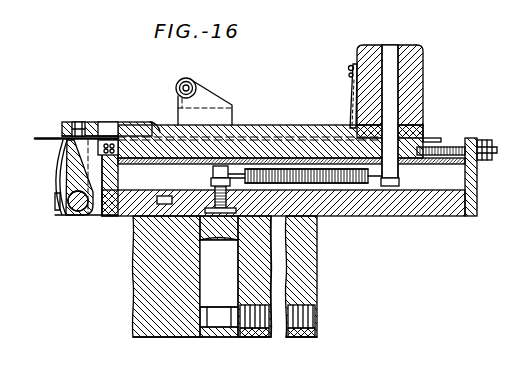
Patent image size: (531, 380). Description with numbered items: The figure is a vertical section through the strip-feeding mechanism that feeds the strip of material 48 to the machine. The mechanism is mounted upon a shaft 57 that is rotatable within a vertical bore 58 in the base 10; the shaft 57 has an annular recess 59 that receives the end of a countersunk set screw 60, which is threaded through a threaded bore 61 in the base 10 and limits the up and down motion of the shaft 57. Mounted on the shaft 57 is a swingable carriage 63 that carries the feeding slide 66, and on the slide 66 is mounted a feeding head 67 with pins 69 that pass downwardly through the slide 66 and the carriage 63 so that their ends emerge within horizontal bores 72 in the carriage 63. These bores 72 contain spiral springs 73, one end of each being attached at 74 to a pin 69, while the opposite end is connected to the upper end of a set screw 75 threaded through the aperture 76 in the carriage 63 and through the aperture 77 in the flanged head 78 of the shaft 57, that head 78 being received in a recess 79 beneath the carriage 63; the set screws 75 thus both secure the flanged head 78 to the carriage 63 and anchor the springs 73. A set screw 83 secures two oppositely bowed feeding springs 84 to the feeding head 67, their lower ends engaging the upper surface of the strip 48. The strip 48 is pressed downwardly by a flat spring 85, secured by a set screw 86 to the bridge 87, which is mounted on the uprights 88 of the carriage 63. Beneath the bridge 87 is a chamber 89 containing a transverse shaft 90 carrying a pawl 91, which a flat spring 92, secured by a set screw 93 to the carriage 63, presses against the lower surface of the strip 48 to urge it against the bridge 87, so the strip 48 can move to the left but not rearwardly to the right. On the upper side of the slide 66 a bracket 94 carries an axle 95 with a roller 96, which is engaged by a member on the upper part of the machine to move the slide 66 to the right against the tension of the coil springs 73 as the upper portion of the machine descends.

The base 10 is at (305, 268).
The strip of material 48 is at (437, 137).
The shaft 57 is at (219, 261).
The vertical bore 58 is at (199, 295).
The annular recess 59 is at (220, 318).
The countersunk set screw 60 is at (317, 315).
The threaded bore 61 is at (306, 339).
The swingable carriage 63 is at (387, 214).
The feeding slide 66 is at (280, 127).
The feeding head 67 is at (410, 80).
The pins 69 is at (392, 92).
The horizontal bores 72 is at (445, 184).
The spiral springs 73 is at (340, 184).
The attachment point of spring to pin 74 is at (399, 181).
The set screw 75 is at (214, 186).
The aperture in carriage 76 is at (212, 172).
The aperture in flanged head 77 is at (228, 213).
The flanged head 78 is at (212, 209).
The recess 79 is at (158, 206).
The set screw 83 is at (348, 68).
The feeding springs 84 is at (350, 120).
The flat spring 85 is at (146, 124).
The set screw 86 is at (81, 121).
The bridge 87 is at (63, 135).
The uprights 88 is at (111, 147).
The chamber 89 is at (100, 215).
The transverse shaft 90 is at (68, 199).
The pawl 91 is at (56, 172).
The flat spring 92 is at (57, 161).
The set screw 93 is at (55, 205).
The bracket 94 is at (213, 99).
The axle 95 is at (191, 88).
The roller 96 is at (186, 78).